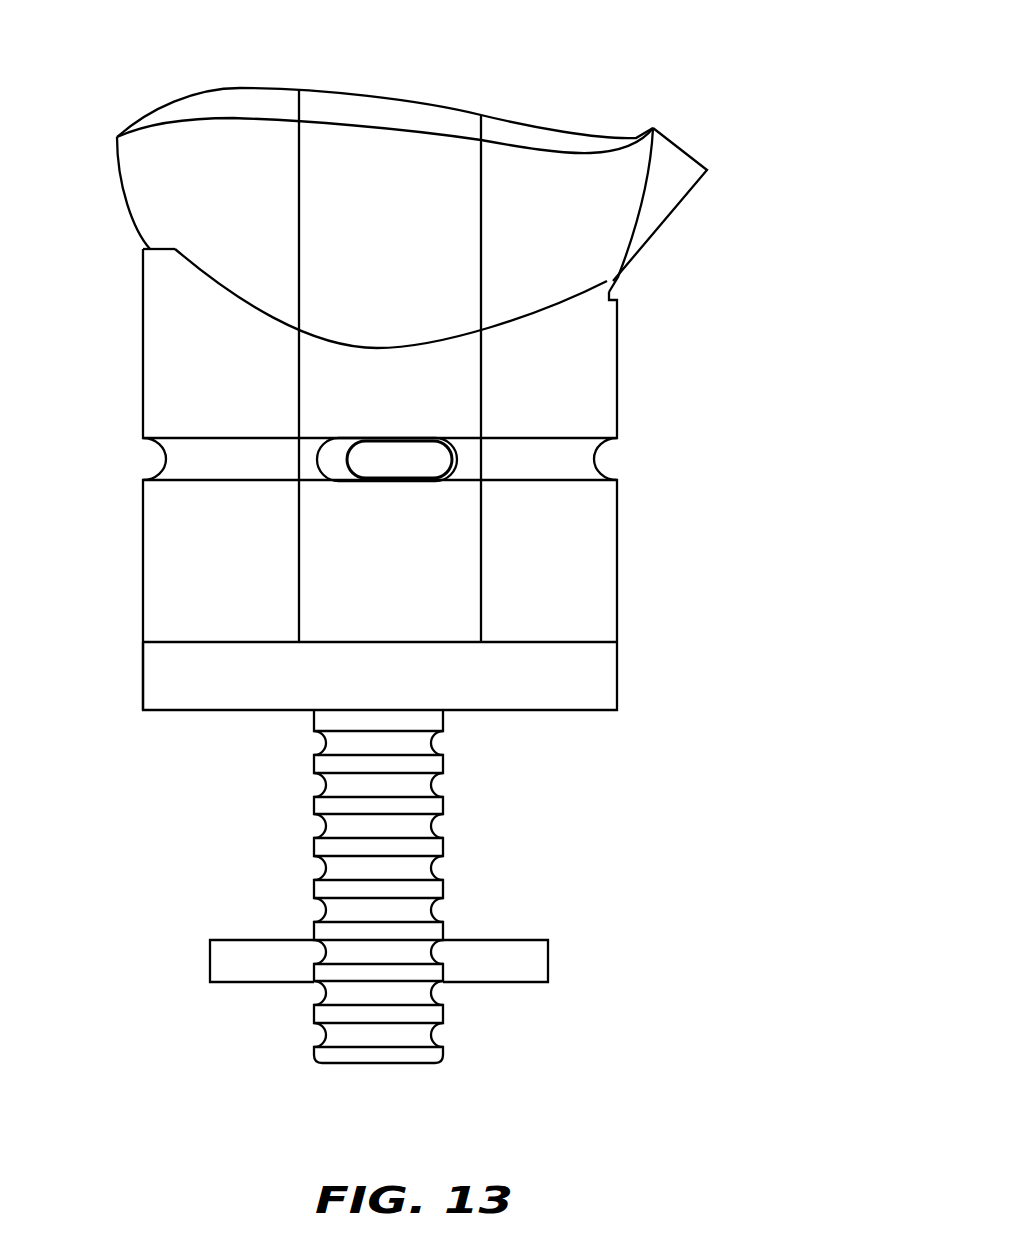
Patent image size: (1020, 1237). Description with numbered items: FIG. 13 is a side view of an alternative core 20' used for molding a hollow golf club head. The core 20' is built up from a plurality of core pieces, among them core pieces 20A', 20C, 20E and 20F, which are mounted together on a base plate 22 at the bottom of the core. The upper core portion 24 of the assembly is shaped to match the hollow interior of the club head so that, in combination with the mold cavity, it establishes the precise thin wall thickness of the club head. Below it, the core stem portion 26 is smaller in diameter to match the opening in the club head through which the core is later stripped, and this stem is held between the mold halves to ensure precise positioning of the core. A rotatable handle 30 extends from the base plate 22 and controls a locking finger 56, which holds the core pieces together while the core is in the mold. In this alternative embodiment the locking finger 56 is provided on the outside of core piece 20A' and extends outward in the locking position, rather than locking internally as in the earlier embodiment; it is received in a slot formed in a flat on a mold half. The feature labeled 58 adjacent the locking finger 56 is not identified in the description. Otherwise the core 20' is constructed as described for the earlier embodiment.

The core 20' is at (476, 531).
The core piece 20A' is at (361, 321).
The core piece 20C is at (568, 170).
The core piece 20E is at (226, 170).
The core piece 20F is at (587, 388).
The base plate 22 is at (603, 672).
The upper core portion 24 is at (108, 90).
The core stem portion 26 is at (108, 258).
The rotatable handle 30 is at (413, 870).
The locking finger 56 is at (400, 458).
The recess around slot 58 is at (333, 462).